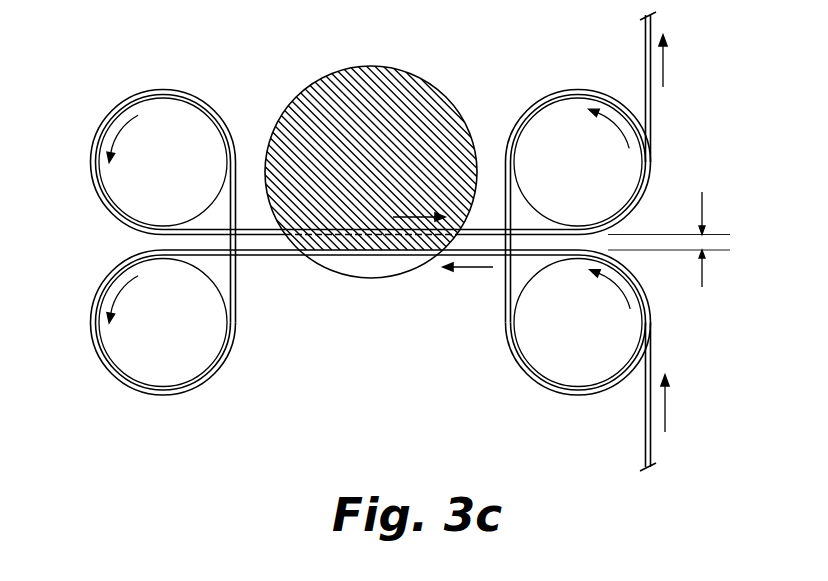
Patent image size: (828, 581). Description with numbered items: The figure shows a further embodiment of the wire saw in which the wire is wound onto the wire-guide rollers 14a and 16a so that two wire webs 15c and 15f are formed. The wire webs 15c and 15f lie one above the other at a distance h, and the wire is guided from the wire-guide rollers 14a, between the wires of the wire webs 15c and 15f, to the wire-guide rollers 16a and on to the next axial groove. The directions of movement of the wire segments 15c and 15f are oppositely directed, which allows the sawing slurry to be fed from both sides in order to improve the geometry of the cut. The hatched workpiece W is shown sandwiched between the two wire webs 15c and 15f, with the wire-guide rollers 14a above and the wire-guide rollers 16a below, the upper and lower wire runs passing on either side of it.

The wire-guide rollers 14a is at (186, 114).
The wire-guide rollers 16a is at (178, 374).
The wire web 15c is at (254, 226).
The wire web 15f is at (276, 259).
The web roll W is at (407, 90).
The distance h is at (706, 228).